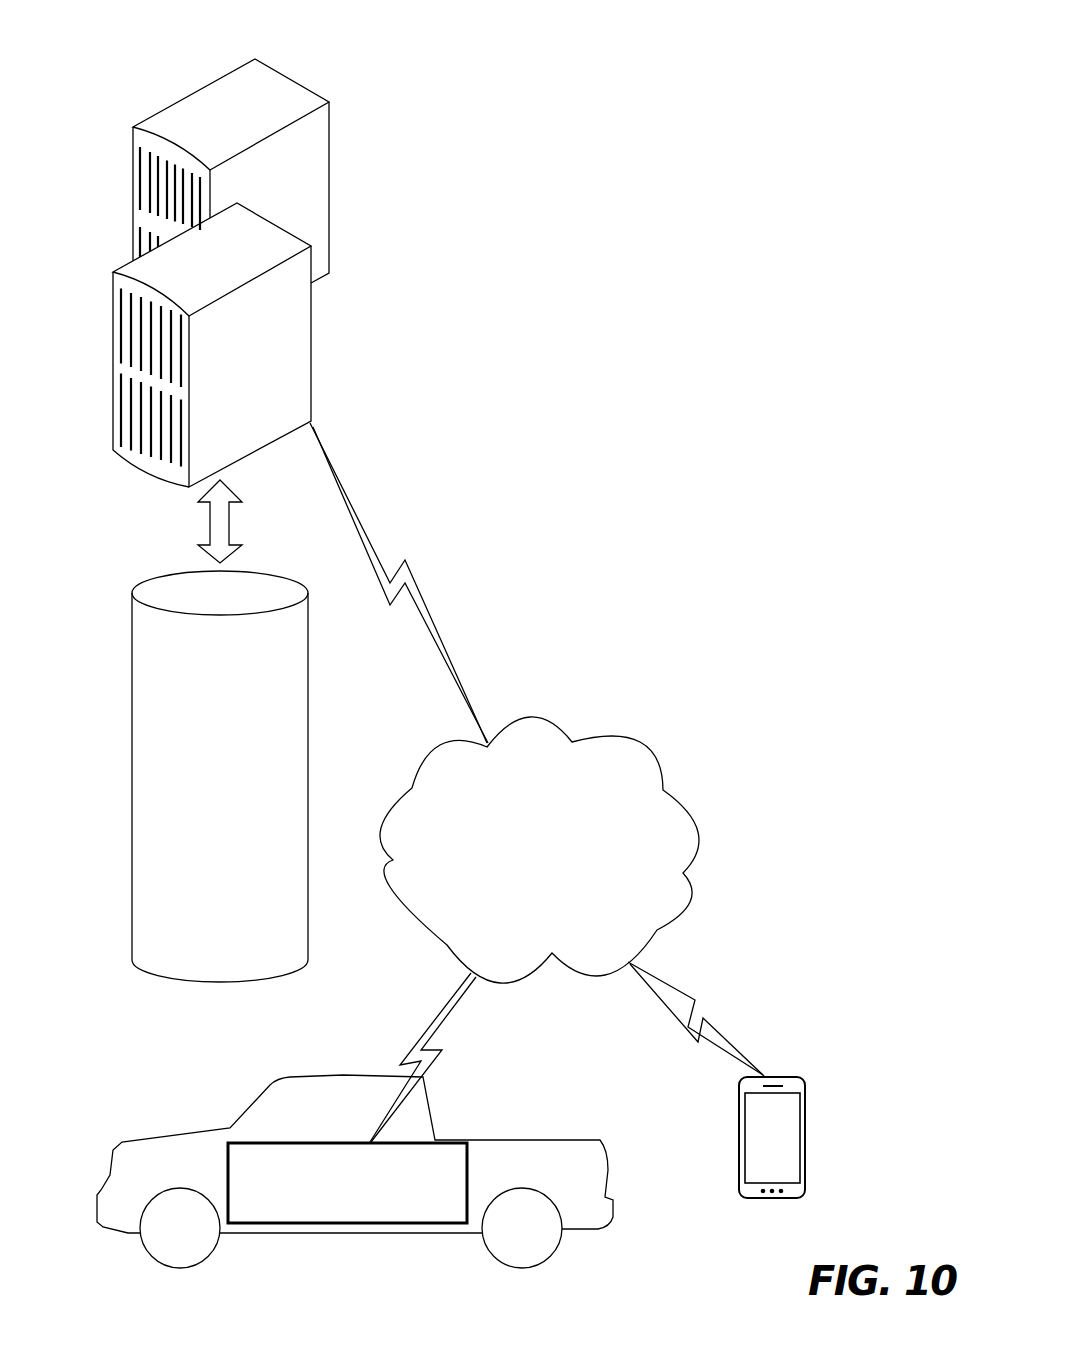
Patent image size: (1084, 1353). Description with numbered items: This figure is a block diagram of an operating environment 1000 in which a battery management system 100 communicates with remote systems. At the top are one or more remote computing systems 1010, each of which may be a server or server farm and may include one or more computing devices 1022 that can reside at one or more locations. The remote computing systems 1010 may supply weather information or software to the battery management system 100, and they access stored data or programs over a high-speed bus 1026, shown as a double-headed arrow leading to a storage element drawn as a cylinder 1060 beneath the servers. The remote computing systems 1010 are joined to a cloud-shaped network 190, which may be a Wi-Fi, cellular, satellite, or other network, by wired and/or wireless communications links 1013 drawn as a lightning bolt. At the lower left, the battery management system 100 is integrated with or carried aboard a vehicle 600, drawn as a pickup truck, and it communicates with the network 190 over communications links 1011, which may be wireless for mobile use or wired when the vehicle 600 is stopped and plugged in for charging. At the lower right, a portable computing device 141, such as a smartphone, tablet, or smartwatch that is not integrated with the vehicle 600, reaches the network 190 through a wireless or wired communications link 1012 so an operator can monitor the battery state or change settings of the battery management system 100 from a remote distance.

The operating environment 1000 is at (144, 47).
The remote computing system 1010 is at (360, 120).
The computing device 1022 is at (313, 315).
The high-speed bus 1026 is at (229, 532).
The database 1060 is at (130, 622).
The communications link 1013 is at (415, 575).
The network 190 is at (628, 938).
The communications link 1011 is at (417, 1044).
The vehicle 600 is at (189, 1056).
The battery management system 100 is at (455, 1217).
The communications link 1012 is at (717, 1019).
The computing device 141 is at (808, 1103).